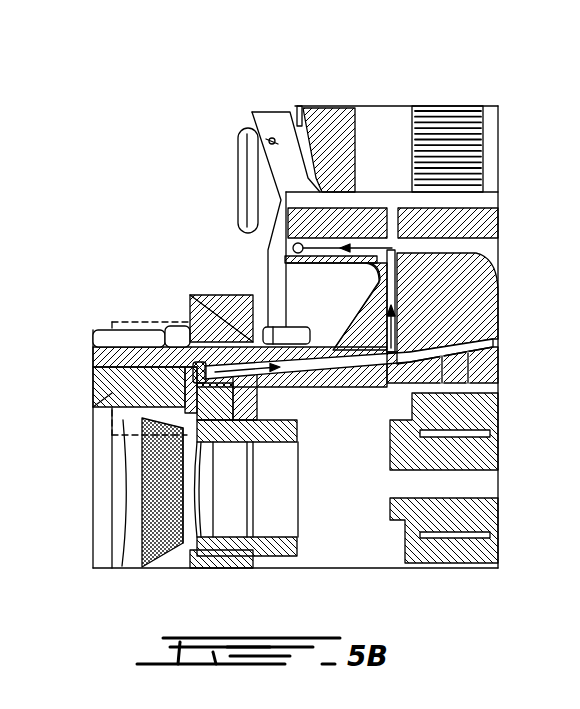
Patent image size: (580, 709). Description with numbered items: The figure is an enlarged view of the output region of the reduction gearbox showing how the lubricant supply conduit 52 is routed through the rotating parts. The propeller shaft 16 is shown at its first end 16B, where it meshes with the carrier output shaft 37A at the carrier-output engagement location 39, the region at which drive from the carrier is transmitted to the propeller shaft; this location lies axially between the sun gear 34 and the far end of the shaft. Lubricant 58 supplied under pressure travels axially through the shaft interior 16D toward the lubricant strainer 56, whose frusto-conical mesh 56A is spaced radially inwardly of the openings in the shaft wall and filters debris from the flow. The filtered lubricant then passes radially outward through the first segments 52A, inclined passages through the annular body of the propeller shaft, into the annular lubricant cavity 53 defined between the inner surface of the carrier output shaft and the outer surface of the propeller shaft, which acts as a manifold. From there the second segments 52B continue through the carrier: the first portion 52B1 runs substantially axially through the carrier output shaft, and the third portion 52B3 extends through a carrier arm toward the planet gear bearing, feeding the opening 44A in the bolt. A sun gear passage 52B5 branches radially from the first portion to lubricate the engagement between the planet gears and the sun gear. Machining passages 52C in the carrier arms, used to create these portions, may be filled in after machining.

The propeller shaft 16 is at (95, 409).
The first end of the propeller shaft 16B is at (307, 556).
The shaft interior 16D is at (107, 540).
The sun gear 34 is at (511, 412).
The carrier output shaft 37A is at (100, 346).
The carrier-output engagement location 39 is at (118, 320).
The opening in the bolt 44A is at (284, 220).
The lubricant supply conduit 52 is at (290, 262).
The first segment 52A is at (257, 406).
The second segment 52B is at (358, 342).
The first portion of the second segment 52B1 is at (368, 312).
The third portion of the second segment 52B3 is at (318, 188).
The sun gear passage 52B5 is at (470, 367).
The machining passage 52C is at (393, 222).
The annular lubricant cavity 53 is at (188, 345).
The lubricant strainer 56 is at (158, 580).
The mesh 56A is at (163, 540).
The lubricant 58 is at (456, 250).